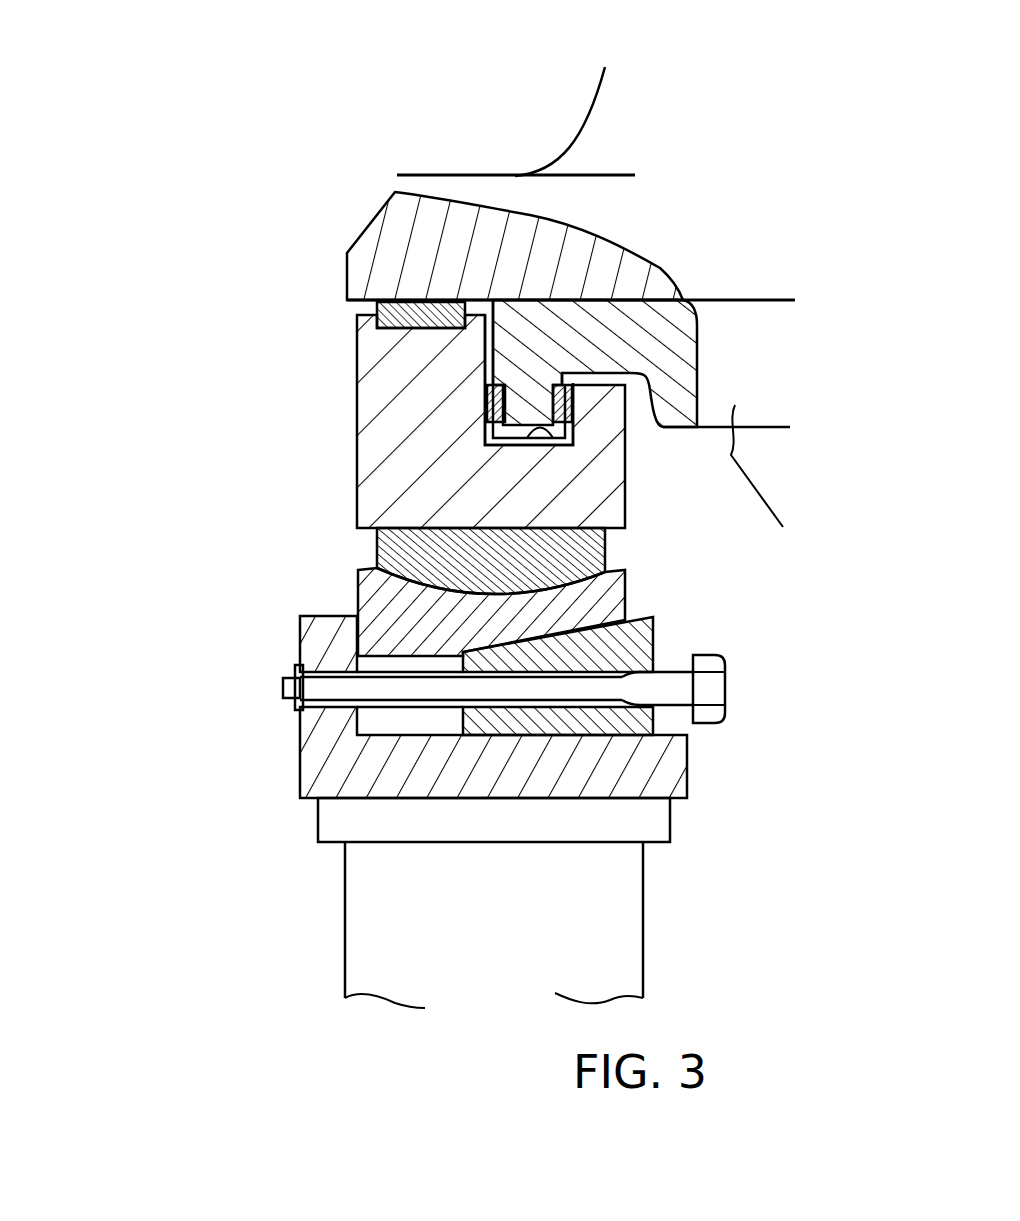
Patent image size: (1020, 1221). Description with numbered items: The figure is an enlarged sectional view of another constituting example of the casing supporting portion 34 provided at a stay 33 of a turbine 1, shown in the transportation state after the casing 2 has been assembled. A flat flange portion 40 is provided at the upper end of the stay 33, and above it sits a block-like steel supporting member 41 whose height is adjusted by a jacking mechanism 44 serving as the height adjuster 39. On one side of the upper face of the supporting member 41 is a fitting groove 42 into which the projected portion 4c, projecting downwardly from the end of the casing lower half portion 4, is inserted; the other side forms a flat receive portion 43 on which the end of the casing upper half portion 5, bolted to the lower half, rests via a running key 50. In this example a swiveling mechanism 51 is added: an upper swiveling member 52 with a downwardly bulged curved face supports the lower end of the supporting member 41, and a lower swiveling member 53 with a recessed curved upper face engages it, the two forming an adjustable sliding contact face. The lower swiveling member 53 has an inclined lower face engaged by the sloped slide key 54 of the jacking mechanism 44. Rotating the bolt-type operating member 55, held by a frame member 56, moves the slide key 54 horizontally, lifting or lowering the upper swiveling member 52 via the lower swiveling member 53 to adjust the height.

The turbine 1 is at (267, 115).
The casing 2 is at (453, 172).
The casing lower half portion 4 is at (641, 413).
The projected portion for supporting 4c is at (520, 410).
The casing upper half portion 5 is at (610, 112).
The stay 33 is at (625, 892).
The casing supporting portion 34 is at (203, 830).
The height adjuster 39 is at (737, 757).
The flange portion 40 is at (643, 822).
The supporting member 41 is at (382, 440).
The fitting groove 42 is at (553, 440).
The receive portion 43 is at (370, 308).
The jacking mechanism 44 is at (738, 722).
The running key 50 is at (413, 298).
The swiveling mechanism 51 is at (343, 548).
The upper swiveling member 52 is at (587, 545).
The lower swiveling member 53 is at (600, 597).
The slide key 54 is at (653, 635).
The bolt-type operating member 55 is at (725, 688).
The frame member 56 is at (332, 750).